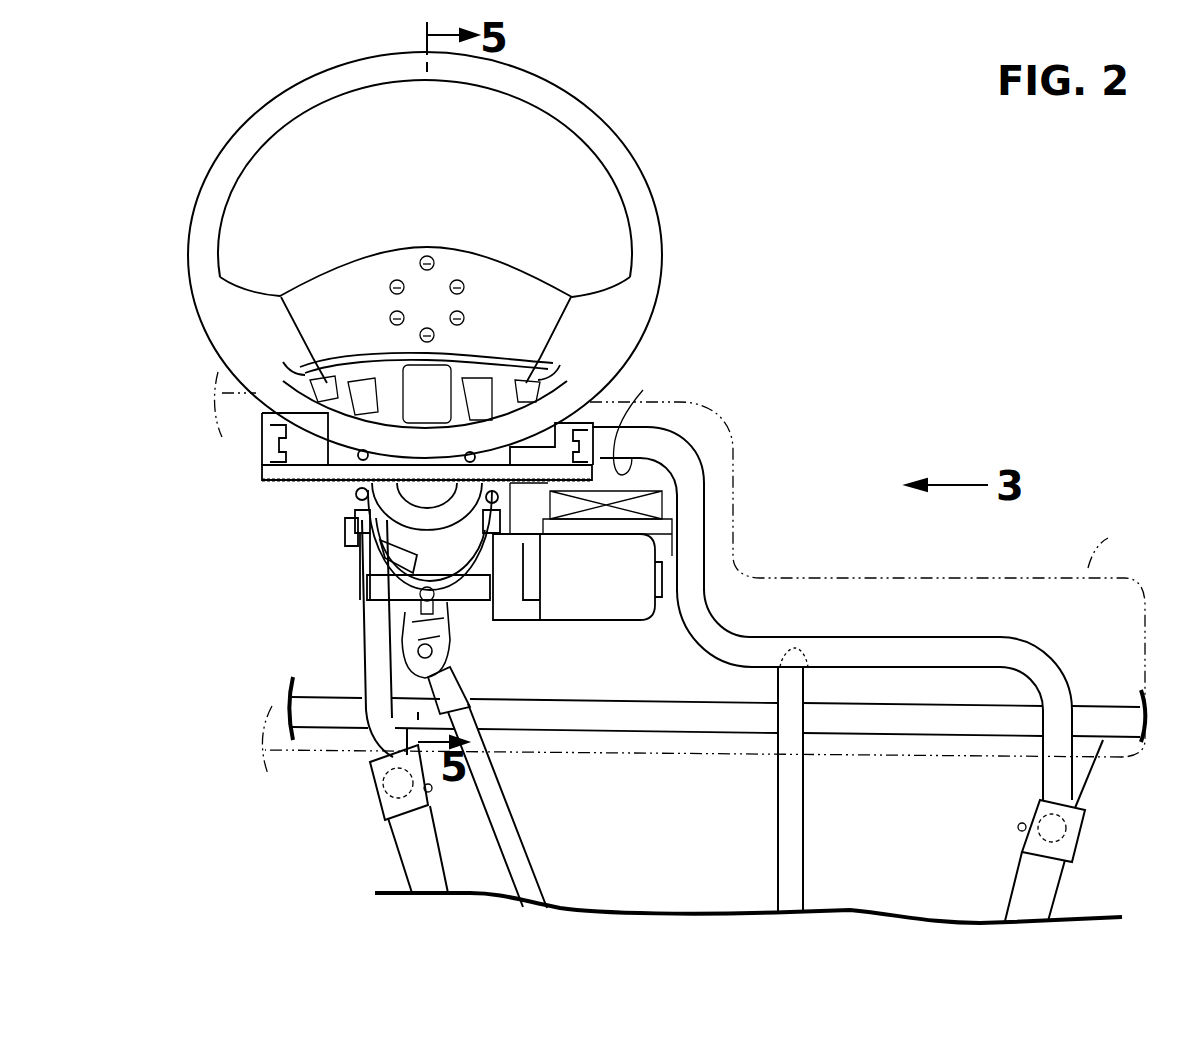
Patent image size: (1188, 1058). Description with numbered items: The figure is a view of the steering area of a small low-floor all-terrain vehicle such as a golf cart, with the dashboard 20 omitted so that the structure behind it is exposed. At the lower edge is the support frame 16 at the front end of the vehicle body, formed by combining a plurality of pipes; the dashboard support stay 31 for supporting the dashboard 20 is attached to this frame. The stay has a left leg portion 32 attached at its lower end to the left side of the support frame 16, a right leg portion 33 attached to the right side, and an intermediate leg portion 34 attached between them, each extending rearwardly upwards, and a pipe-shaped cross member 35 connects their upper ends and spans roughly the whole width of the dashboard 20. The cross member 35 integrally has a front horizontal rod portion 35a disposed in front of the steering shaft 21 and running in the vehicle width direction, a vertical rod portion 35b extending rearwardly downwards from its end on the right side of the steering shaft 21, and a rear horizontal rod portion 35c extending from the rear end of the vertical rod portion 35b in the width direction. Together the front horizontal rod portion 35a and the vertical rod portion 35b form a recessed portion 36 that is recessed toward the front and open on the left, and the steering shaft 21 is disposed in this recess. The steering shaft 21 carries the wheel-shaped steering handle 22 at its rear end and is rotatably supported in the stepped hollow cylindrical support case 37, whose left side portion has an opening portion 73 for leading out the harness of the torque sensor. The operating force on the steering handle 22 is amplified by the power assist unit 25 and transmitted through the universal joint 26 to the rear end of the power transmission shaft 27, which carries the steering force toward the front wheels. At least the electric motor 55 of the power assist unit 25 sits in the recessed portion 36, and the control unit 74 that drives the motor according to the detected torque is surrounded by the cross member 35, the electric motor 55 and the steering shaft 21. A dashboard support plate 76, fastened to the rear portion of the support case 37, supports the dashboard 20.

The support frame 16 is at (1101, 690).
The dashboard 20 is at (680, 573).
The steering shaft 21 is at (435, 388).
The steering handle 22 is at (613, 152).
The power assist unit 25 is at (397, 616).
The universal joint 26 is at (466, 684).
The power transmission shaft 27 is at (512, 824).
The dashboard support stay 31 is at (968, 620).
The left leg portion 32 is at (375, 683).
The right leg portion 33 is at (1060, 772).
The intermediate leg portion 34 is at (793, 850).
The cross member 35 is at (763, 519).
The front horizontal rod portion 35a is at (628, 438).
The vertical rod portion 35b is at (697, 530).
The rear horizontal rod portion 35c is at (903, 645).
The recessed portion 36 is at (647, 418).
The support case 37 is at (445, 605).
The electric motor 55 is at (612, 585).
The opening portion 73 is at (372, 560).
The control unit 74 is at (632, 512).
The dashboard support plate 76 is at (338, 468).